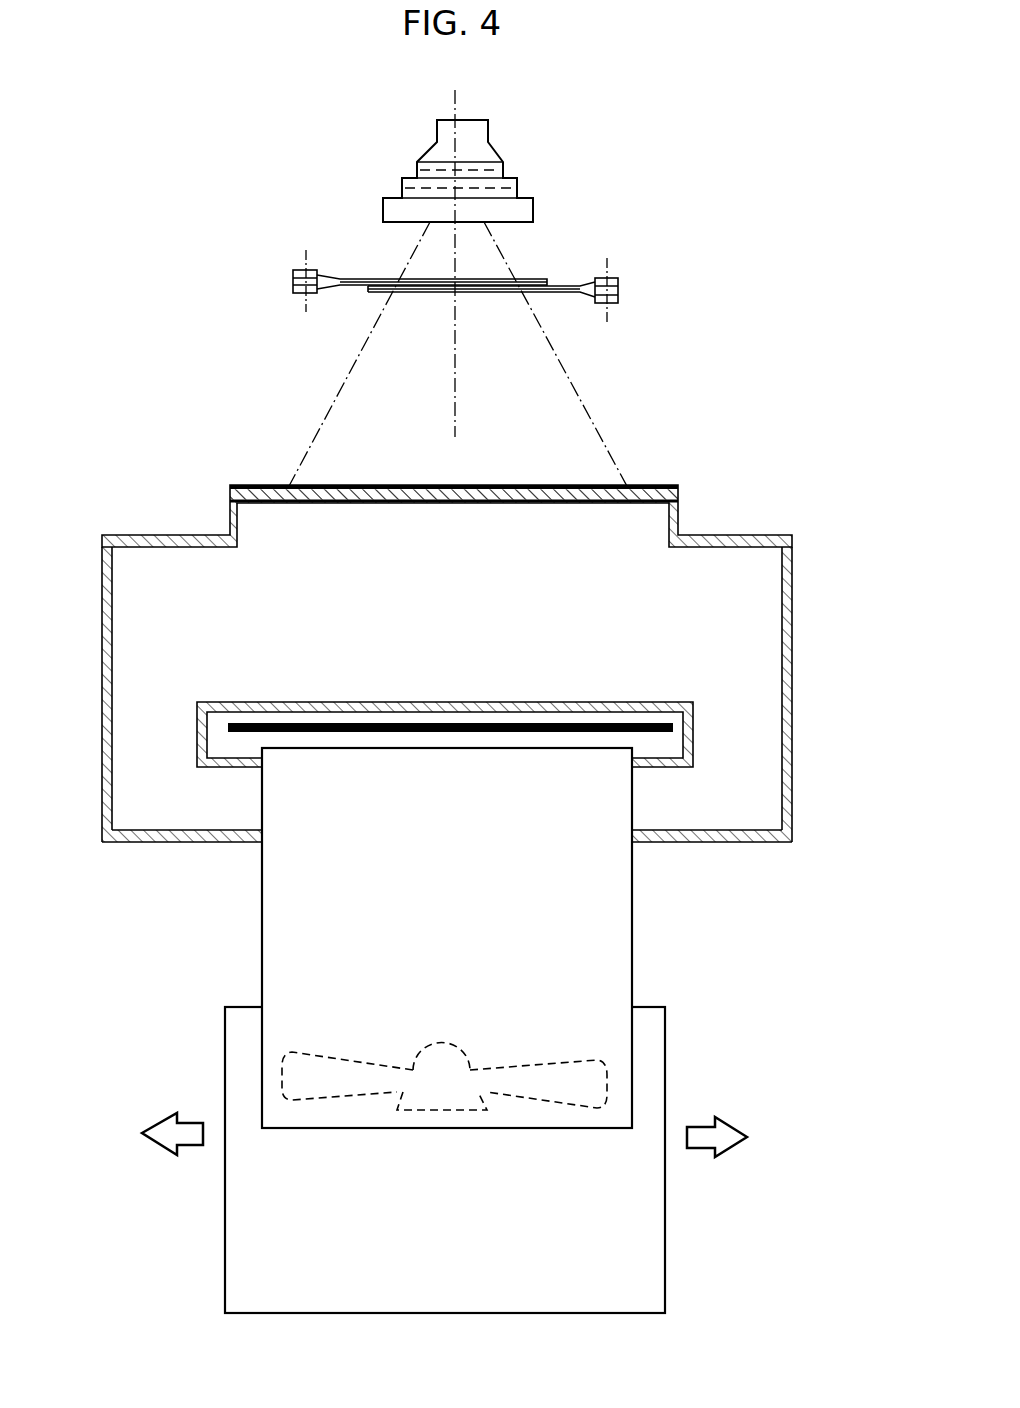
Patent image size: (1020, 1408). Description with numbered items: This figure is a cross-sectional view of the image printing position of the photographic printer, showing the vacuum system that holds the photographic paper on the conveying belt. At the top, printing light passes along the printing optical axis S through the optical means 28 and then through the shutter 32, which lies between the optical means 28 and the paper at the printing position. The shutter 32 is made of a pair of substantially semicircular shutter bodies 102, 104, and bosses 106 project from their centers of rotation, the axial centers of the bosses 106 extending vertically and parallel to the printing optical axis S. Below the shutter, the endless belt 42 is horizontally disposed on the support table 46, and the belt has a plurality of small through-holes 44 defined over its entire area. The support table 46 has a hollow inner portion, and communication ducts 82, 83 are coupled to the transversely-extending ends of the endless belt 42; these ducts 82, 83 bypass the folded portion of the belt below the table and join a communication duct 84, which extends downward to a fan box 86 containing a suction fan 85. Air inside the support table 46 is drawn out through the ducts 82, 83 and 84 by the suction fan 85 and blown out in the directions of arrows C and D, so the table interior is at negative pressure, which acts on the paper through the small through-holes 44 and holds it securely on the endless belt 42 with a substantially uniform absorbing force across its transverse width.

The optical means 28 is at (525, 213).
The shutter 32 is at (471, 289).
The endless belt 42 is at (230, 488).
The small through-holes 44 is at (317, 484).
The support table 46 is at (228, 520).
The communication duct 82 is at (792, 675).
The communication duct 83 is at (100, 675).
The communication duct 84 is at (600, 940).
The suction fan 85 is at (553, 1070).
The fan box 86 is at (655, 1282).
The shutter body 102 is at (543, 292).
The shutter body 104 is at (362, 280).
The boss 106 is at (292, 272).
The printing optical axis S is at (455, 398).
The arrow D is at (190, 1133).
The arrow C is at (705, 1135).